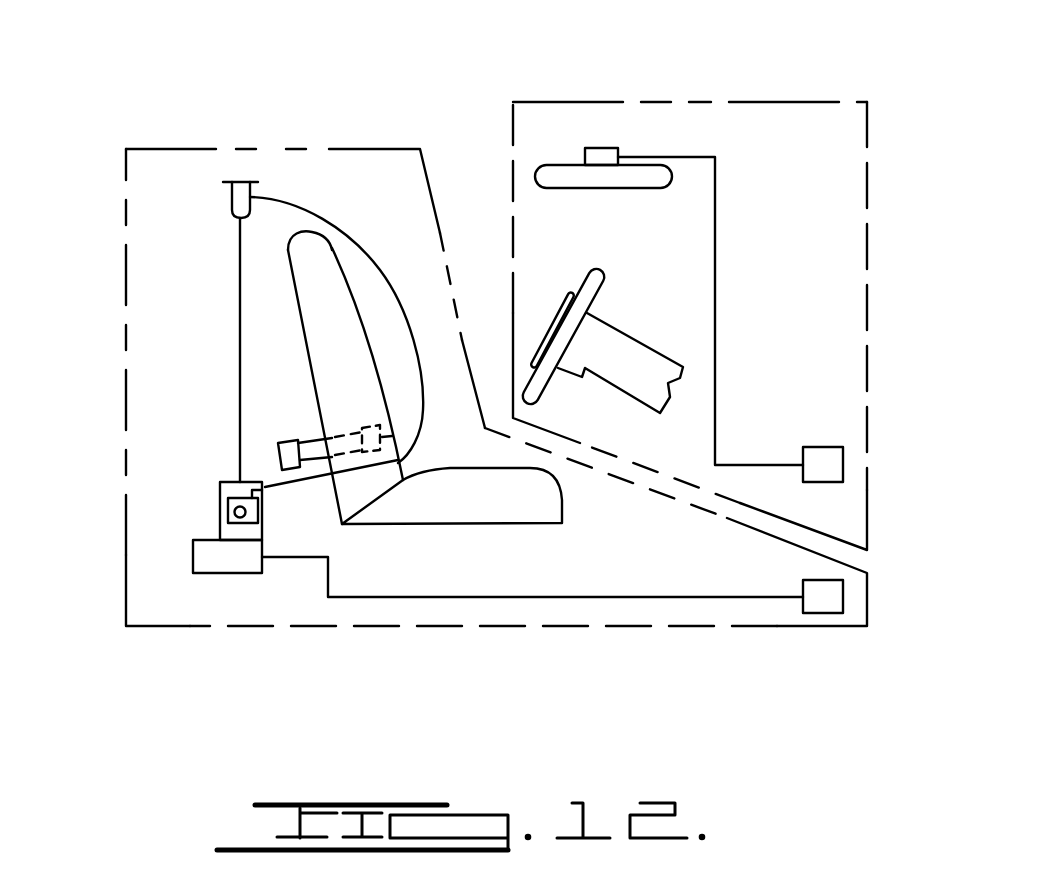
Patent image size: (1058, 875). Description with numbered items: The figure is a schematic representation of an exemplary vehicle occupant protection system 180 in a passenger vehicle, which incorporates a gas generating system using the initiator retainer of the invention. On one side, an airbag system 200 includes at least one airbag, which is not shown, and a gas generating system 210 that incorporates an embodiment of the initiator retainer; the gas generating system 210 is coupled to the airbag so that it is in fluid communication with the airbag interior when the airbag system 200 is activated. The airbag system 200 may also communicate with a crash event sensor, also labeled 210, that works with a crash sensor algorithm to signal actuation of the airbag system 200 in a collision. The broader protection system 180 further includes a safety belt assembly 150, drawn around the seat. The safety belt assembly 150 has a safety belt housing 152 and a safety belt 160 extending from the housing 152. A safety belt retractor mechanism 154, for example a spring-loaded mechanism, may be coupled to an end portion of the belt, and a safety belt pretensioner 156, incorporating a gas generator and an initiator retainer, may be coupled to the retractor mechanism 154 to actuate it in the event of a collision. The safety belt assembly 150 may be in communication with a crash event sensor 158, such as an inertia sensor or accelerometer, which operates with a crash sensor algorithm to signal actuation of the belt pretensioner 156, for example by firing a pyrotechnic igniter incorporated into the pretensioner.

The safety belt assembly 150 is at (513, 628).
The safety belt housing 152 is at (227, 512).
The safety belt retractor mechanism 154 is at (146, 468).
The safety belt pretensioner 156 is at (237, 560).
The crash event sensor 158 is at (817, 587).
The safety belt 160 is at (336, 345).
The vehicle occupant protection system 180 is at (392, 281).
The airbag system 200 is at (770, 100).
The gas generating system 210 is at (572, 178).